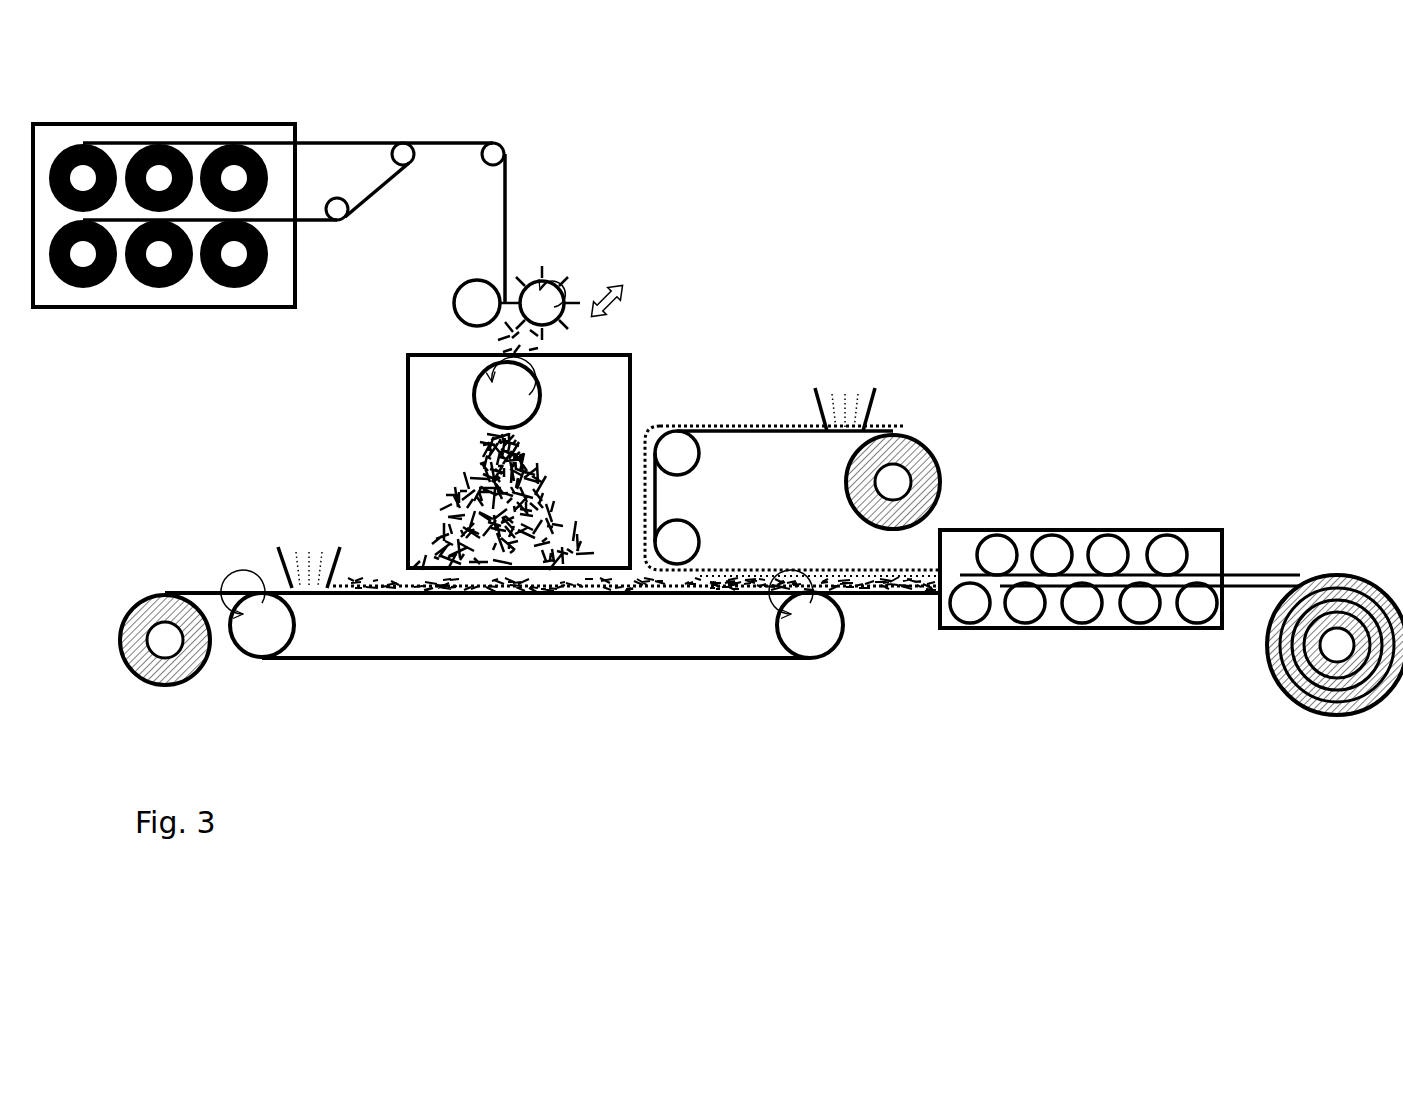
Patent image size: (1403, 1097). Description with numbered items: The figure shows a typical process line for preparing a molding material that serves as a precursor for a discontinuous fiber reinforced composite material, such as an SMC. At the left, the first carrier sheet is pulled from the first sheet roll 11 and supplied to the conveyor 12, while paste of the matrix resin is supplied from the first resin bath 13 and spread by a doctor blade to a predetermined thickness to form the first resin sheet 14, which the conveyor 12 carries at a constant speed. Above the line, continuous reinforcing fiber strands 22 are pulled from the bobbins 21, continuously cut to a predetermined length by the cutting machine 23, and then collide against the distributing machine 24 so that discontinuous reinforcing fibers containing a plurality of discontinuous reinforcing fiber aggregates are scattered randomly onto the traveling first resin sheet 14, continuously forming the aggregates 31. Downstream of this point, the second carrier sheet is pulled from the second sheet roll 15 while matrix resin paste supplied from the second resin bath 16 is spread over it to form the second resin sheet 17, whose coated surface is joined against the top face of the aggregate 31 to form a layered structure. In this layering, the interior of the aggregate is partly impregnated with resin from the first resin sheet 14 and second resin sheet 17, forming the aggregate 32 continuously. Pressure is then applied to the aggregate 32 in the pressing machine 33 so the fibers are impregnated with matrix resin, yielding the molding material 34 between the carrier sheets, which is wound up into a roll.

The first sheet roll 11 is at (162, 606).
The conveyor 12 is at (467, 628).
The first resin bath 13 is at (314, 554).
The first resin sheet 14 is at (355, 600).
The second sheet roll 15 is at (906, 447).
The second resin bath 16 is at (846, 402).
The second resin sheet 17 is at (725, 417).
The bobbin of reinforced fiber strand 21 is at (256, 148).
The continuous reinforcing fiber strand 22 is at (294, 205).
The cutting machine 23 is at (541, 290).
The distributing machine 24 is at (458, 394).
The aggregates of discontinuous reinforcing fibers 31 is at (611, 601).
The partially impregnated aggregates 32 is at (881, 601).
The pressing machine 33 is at (1120, 605).
The molding material 34 is at (1294, 668).